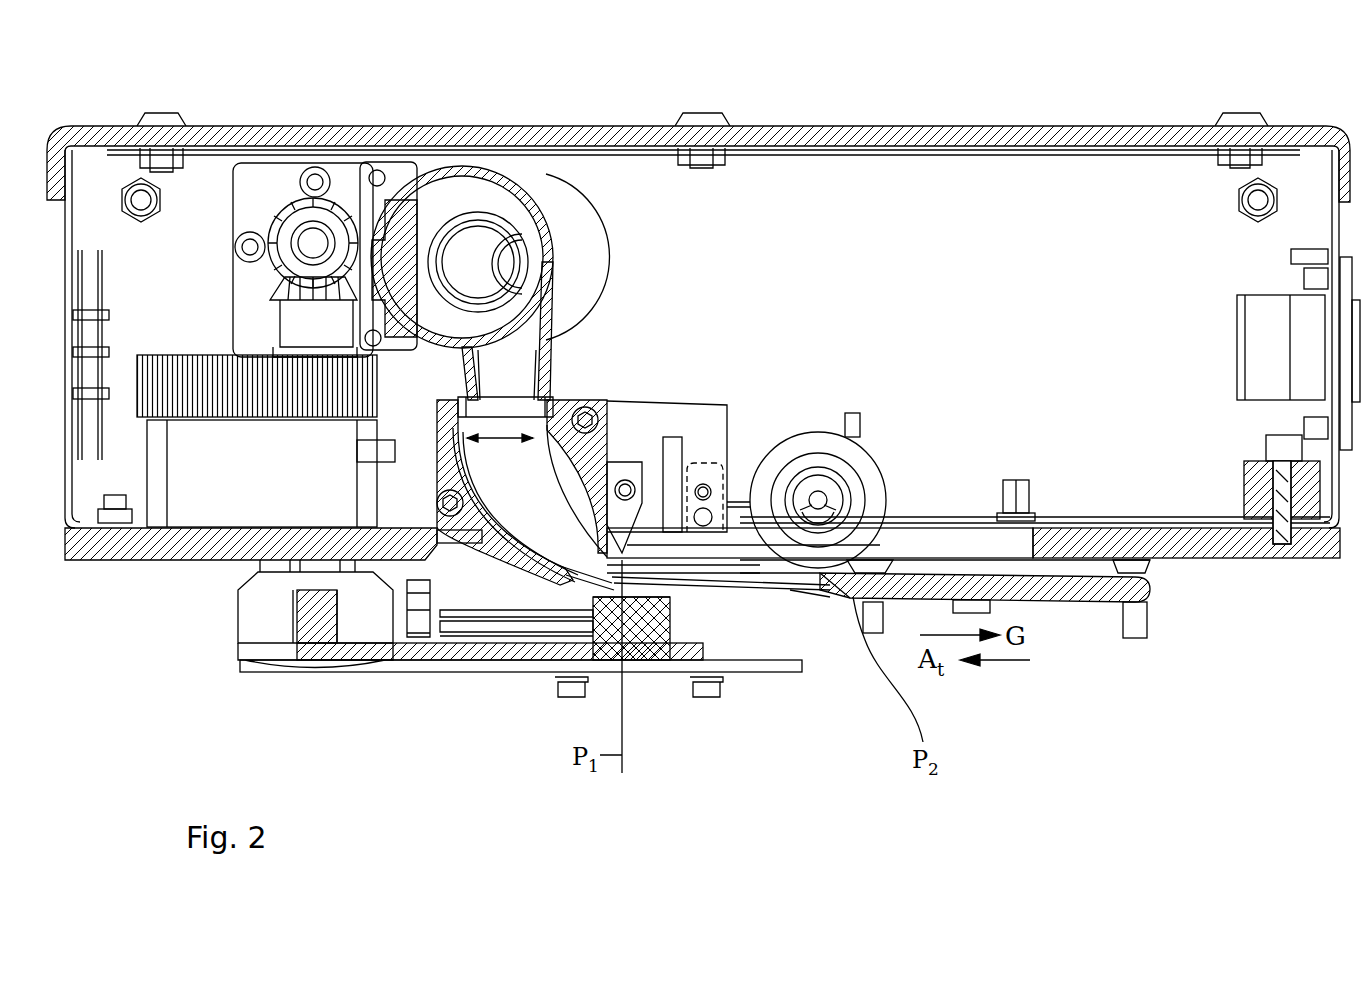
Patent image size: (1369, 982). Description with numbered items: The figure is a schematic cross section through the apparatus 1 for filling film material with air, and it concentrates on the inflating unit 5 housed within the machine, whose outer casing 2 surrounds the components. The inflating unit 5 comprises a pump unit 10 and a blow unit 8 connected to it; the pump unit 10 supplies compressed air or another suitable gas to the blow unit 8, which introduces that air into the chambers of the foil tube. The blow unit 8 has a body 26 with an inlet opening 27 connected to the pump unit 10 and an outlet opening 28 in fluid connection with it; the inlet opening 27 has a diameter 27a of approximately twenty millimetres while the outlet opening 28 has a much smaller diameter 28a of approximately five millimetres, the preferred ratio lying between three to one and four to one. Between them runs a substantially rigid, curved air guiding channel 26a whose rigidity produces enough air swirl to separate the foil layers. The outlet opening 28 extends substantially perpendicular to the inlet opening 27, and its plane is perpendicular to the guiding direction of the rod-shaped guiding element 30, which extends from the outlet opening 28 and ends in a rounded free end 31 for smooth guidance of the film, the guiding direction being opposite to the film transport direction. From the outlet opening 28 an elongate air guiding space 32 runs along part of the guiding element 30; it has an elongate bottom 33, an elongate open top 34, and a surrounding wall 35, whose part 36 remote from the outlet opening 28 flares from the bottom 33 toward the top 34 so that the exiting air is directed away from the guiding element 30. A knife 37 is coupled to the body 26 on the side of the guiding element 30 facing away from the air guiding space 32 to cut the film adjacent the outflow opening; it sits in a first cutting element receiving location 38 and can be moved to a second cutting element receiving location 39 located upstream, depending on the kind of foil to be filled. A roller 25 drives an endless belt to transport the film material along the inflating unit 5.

The apparatus 1 is at (1018, 102).
The housing cover 2 is at (870, 134).
The inflating unit 5 is at (697, 383).
The blow unit 8 is at (445, 470).
The pump unit 10 is at (438, 193).
The roller 25 is at (257, 620).
The body 26 is at (442, 492).
The air guiding channel 26a is at (560, 548).
The inlet opening 27 is at (503, 427).
The diameter of the inlet opening 27a is at (500, 453).
The outlet opening 28 is at (632, 583).
The diameter of the outlet opening 28a is at (598, 578).
The guiding element 30 is at (1050, 604).
The free end 31 is at (1137, 640).
The air guiding space 32 is at (810, 606).
The bottom 33 is at (787, 578).
The top 34 is at (747, 583).
The surrounding wall 35 is at (700, 572).
The wall part 36 is at (833, 595).
The knife 37 is at (620, 470).
The first cutting element receiving location 38 is at (648, 445).
The second cutting element receiving location 39 is at (713, 450).